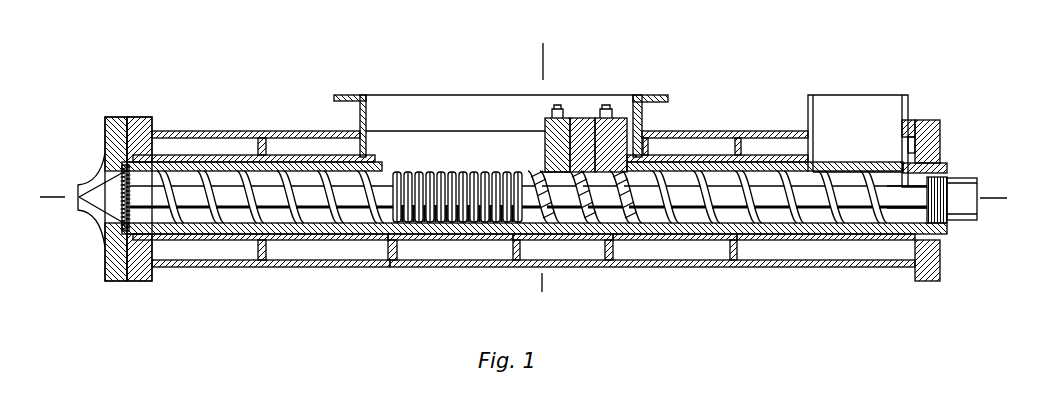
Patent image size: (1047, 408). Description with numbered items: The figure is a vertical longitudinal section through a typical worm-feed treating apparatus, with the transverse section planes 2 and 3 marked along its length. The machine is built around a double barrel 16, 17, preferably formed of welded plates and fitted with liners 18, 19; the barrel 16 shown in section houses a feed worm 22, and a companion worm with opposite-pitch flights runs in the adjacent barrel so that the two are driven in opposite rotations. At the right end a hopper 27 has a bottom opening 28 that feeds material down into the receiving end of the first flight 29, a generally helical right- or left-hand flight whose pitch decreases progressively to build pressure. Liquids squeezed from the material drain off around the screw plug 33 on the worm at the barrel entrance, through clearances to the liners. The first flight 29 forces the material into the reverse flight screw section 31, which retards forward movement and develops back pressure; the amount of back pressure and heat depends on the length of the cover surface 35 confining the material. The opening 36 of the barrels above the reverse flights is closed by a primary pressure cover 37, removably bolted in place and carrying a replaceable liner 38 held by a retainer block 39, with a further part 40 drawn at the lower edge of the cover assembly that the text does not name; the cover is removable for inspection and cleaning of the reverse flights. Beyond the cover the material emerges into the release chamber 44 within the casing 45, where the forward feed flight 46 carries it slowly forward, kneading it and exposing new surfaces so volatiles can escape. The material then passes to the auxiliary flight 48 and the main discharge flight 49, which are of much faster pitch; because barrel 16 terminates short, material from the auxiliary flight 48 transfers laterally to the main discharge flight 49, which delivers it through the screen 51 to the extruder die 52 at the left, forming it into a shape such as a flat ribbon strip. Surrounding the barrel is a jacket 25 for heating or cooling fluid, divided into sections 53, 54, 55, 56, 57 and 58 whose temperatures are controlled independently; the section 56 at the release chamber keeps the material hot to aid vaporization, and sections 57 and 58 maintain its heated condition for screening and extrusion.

The section line 2- 2 is at (523, 212).
The section line 3- 3 is at (551, 174).
The barrel 16 is at (325, 157).
The barrel 17 is at (233, 158).
The liner 18 is at (643, 230).
The liner 19 is at (230, 228).
The feed worm 22 is at (673, 216).
The jacket 25 is at (442, 268).
The hopper 27 is at (870, 110).
The bottom opening 28 is at (845, 173).
The first flight 29 is at (860, 213).
The reverse flight screw section 31 is at (568, 218).
The screw plug 33 is at (943, 182).
The cover surface 35 is at (597, 118).
The opening 36 is at (673, 126).
The primary pressure cover 37 is at (622, 118).
The replaceable liner 38 is at (547, 163).
The retainer block 39 is at (543, 127).
The block lip 40 is at (545, 172).
The release chamber 44 is at (483, 126).
The casing 45 is at (645, 94).
The forward feed flight 46 is at (459, 180).
The auxiliary flight 48 is at (325, 217).
The main discharge flight 49 is at (197, 186).
The screen 51 is at (127, 167).
The extruder die 52 is at (90, 213).
The jacket section 53 is at (813, 254).
The jacket section 54 is at (690, 252).
The jacket section 55 is at (537, 253).
The jacket section 56 is at (433, 255).
The jacket section 57 is at (362, 257).
The jacket section 58 is at (247, 258).